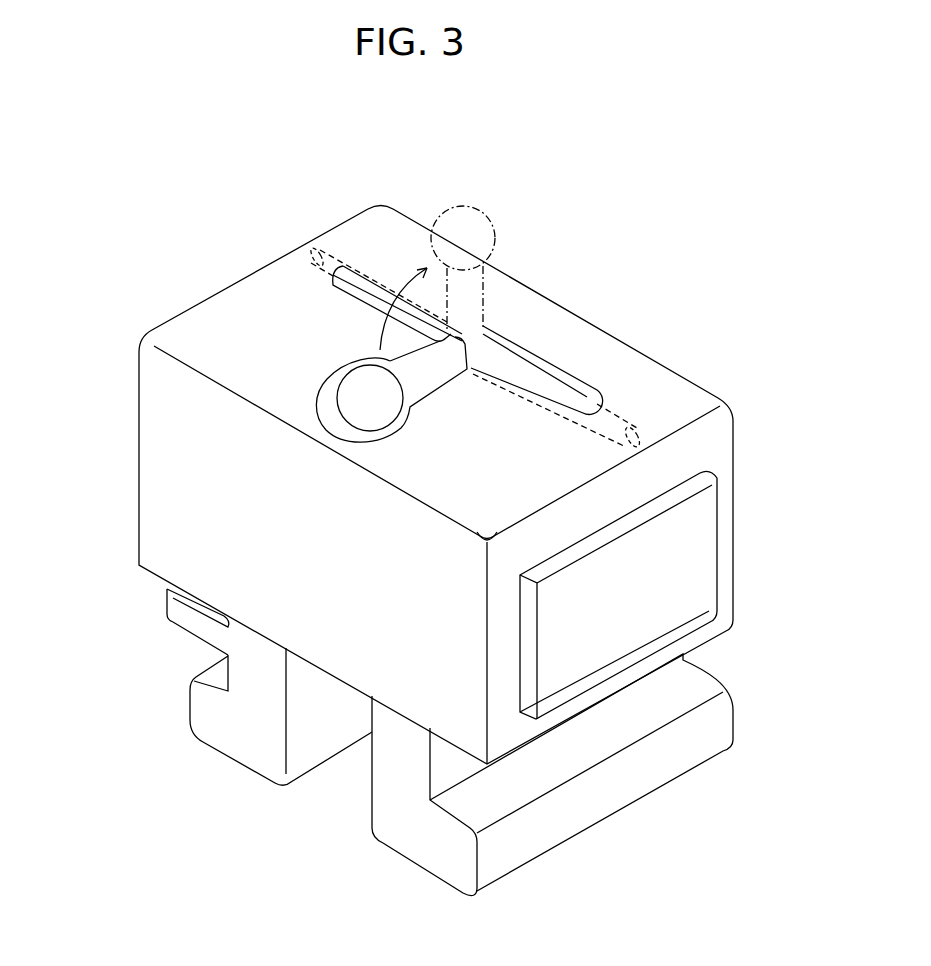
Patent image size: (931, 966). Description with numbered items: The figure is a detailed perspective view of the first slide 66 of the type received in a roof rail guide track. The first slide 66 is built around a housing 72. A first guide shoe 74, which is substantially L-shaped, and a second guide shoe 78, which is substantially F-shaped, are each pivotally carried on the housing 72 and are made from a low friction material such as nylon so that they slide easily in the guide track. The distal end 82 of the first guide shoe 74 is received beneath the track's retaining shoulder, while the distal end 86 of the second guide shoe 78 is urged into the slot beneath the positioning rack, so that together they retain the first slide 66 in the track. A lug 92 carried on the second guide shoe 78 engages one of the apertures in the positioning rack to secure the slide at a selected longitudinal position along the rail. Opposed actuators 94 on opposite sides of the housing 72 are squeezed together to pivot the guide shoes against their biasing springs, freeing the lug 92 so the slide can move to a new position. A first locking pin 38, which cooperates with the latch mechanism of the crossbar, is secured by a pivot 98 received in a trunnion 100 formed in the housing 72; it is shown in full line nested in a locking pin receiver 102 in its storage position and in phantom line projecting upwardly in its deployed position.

The first slide 66 is at (703, 173).
The housing 72 is at (162, 480).
The opposed actuators 94 is at (658, 612).
The locking pin receiver 102 is at (317, 396).
The first locking pin 38 is at (354, 390).
The pivot 98 is at (382, 293).
The trunnion 100 is at (313, 256).
The lug 92 is at (166, 606).
The distal end of the second guide shoe 86 is at (193, 705).
The second guide shoe 78 is at (233, 742).
The first guide shoe 74 is at (425, 848).
The distal end of the first guide shoe 82 is at (556, 820).